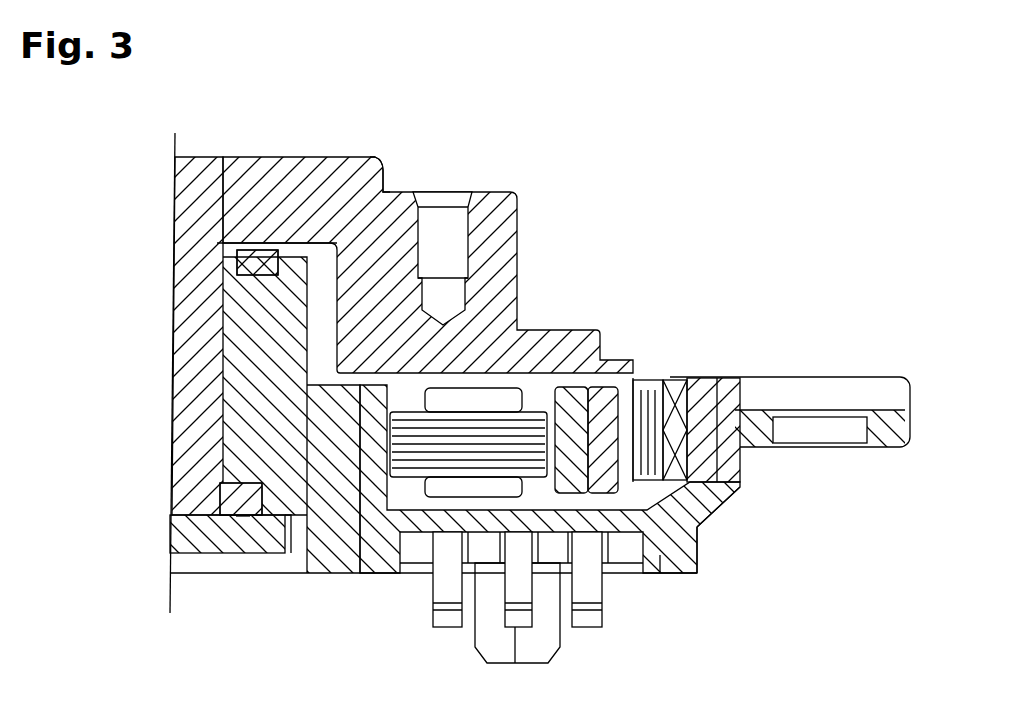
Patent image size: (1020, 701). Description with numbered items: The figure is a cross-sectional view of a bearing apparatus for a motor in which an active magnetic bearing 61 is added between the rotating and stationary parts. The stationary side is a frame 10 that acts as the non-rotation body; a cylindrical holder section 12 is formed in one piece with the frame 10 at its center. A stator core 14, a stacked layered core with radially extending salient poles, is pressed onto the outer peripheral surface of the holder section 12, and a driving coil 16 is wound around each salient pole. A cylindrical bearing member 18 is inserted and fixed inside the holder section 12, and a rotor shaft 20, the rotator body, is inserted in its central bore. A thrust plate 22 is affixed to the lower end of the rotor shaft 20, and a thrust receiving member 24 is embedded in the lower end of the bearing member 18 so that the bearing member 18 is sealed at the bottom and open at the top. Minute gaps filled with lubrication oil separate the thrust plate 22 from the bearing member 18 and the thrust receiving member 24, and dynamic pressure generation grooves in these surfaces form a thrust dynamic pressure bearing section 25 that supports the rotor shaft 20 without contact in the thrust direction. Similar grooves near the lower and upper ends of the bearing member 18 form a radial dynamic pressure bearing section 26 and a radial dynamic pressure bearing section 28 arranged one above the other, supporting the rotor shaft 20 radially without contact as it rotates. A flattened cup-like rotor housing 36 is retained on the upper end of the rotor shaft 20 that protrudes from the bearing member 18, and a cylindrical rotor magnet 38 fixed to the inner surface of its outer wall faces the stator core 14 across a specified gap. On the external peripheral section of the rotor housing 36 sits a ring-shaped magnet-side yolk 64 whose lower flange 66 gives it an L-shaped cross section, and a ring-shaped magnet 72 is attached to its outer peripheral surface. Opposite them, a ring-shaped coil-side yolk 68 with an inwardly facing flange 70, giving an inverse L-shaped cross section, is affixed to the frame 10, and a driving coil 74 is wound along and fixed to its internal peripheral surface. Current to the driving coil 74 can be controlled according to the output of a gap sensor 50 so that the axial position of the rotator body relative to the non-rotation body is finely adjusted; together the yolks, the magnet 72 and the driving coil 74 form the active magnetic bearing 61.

The frame 10 is at (662, 560).
The holder section 12 is at (360, 573).
The stator core 14 is at (497, 428).
The driving coil 16 is at (488, 400).
The bearing member 18 is at (311, 510).
The rotor shaft 20 is at (187, 190).
The thrust plate 22 is at (215, 492).
The thrust receiving member 24 is at (172, 552).
The thrust dynamic pressure bearing section 25 is at (243, 518).
The radial dynamic pressure bearing section 26 is at (218, 445).
The radial dynamic pressure bearing section 28 is at (218, 322).
The rotor housing 36 is at (497, 230).
The rotor magnet 38 is at (605, 360).
The gap sensor 50 is at (375, 162).
The active magnetic bearing 61 is at (735, 466).
The magnet-side yolk 64 is at (640, 398).
The flange 66 is at (697, 565).
The coil-side yolk 68 is at (733, 382).
The inwardly facing flange 70 is at (700, 517).
The magnet 72 is at (668, 392).
The driving coil 74 is at (682, 395).